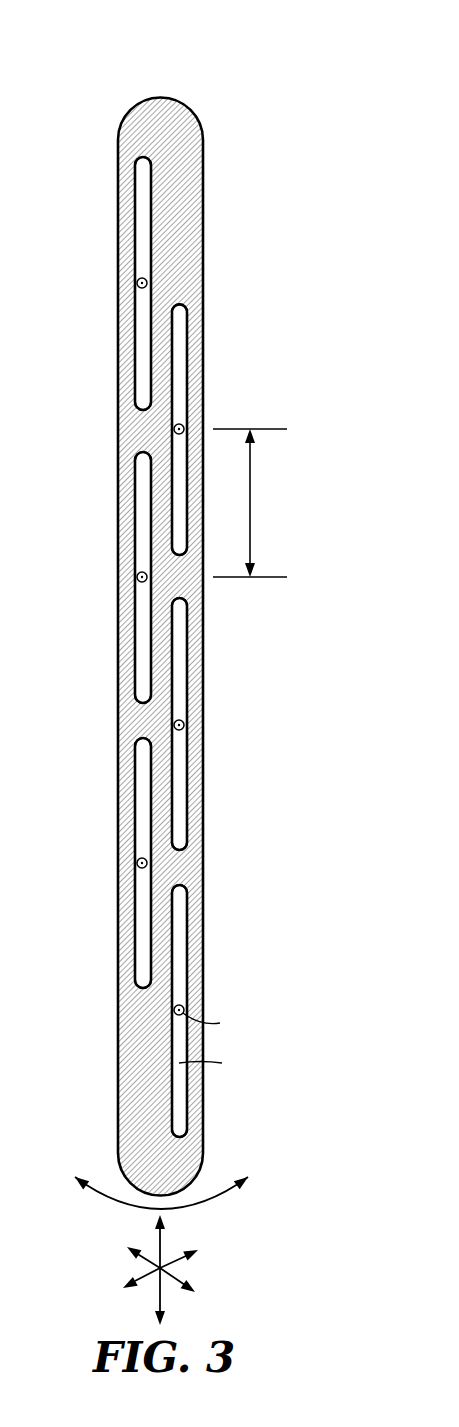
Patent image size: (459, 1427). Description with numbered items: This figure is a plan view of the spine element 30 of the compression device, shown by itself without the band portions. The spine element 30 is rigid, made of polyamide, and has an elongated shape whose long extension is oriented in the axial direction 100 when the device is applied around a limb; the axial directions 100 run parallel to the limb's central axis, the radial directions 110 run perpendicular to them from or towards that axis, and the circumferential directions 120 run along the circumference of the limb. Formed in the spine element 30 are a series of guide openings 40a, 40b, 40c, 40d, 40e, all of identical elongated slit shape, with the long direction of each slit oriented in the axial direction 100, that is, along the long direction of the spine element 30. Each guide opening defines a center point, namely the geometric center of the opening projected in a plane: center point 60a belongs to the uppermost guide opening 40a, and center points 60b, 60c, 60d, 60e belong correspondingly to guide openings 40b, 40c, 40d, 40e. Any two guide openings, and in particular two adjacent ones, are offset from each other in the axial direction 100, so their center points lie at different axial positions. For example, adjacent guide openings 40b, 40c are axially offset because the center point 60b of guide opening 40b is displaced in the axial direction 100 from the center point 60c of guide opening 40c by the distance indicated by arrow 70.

The spine element 30 is at (130, 68).
The uppermost guide opening 40a is at (143, 214).
The guide opening 40b is at (178, 355).
The guide opening 40c is at (143, 515).
The guide opening 40d is at (179, 790).
The guide opening 40e is at (143, 800).
The center point 60a is at (137, 283).
The center point 60b is at (182, 426).
The center point 60c is at (137, 577).
The center point 60d is at (183, 728).
The center point 60e is at (137, 863).
The offset distance arrow 70 is at (252, 500).
The axial directions 100 is at (157, 1247).
The radial directions 110 is at (172, 1274).
The circumferential directions 120 is at (200, 1203).